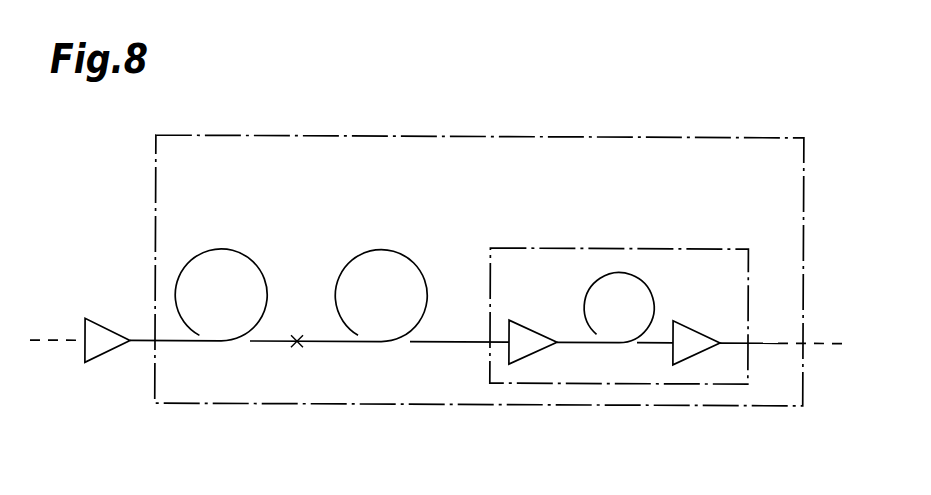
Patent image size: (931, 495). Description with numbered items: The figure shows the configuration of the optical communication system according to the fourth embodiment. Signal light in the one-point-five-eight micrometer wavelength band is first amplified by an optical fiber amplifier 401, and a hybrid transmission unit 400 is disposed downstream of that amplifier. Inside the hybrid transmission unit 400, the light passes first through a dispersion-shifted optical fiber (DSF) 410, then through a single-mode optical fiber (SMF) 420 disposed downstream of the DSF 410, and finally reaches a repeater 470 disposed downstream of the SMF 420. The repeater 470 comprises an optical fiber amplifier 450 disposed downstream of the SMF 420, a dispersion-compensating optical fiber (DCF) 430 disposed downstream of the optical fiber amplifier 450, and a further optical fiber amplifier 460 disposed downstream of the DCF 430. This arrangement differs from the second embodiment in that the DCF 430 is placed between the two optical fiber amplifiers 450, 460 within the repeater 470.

The hybrid transmission unit 400 is at (369, 136).
The optical fiber amplifier 401 is at (97, 321).
The dispersion-shifted optical fiber 410 is at (228, 250).
The single-mode optical fiber 420 is at (385, 250).
The dispersion-compensating optical fiber 430 is at (613, 272).
The optical fiber amplifier 450 is at (518, 320).
The optical fiber amplifier 460 is at (686, 320).
The repeater 470 is at (731, 248).